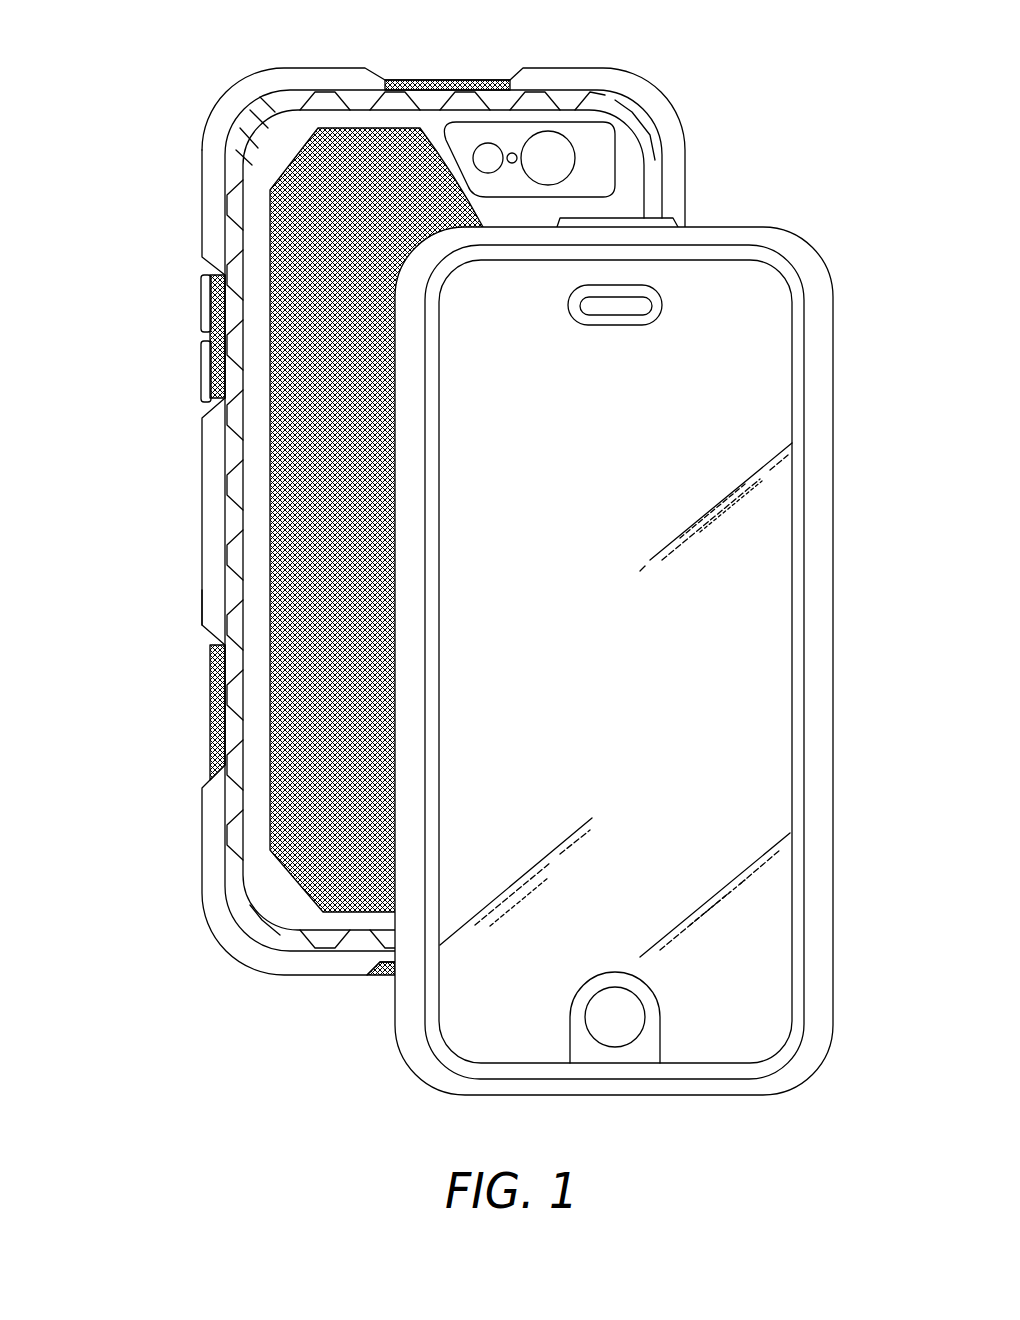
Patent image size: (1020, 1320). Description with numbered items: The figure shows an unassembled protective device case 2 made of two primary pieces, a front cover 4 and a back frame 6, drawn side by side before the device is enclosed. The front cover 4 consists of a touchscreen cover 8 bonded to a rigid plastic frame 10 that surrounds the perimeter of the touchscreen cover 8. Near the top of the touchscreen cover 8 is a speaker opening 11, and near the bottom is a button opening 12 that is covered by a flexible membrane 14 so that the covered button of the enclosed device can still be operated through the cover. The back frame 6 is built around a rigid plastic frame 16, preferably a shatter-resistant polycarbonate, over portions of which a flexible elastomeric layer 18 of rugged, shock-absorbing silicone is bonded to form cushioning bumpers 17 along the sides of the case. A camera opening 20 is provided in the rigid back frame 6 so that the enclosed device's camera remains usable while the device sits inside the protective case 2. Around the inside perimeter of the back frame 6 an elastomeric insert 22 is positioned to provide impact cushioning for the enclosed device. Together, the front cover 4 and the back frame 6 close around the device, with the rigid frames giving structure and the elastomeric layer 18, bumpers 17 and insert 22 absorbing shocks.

The protective device case 2 is at (474, 589).
The front cover 4 is at (643, 664).
The back frame 6 is at (410, 500).
The touchscreen cover 8 is at (743, 890).
The rigid plastic frame 10 is at (822, 1013).
The speaker opening 11 is at (648, 298).
The button opening 12 is at (615, 1020).
The flexible membrane 14 is at (585, 1052).
The rigid plastic frame 16 is at (293, 257).
The cushioning bumpers 17 is at (200, 590).
The flexible elastomeric layer 18 is at (213, 858).
The camera opening 20 is at (553, 133).
The elastomeric insert 22 is at (235, 517).